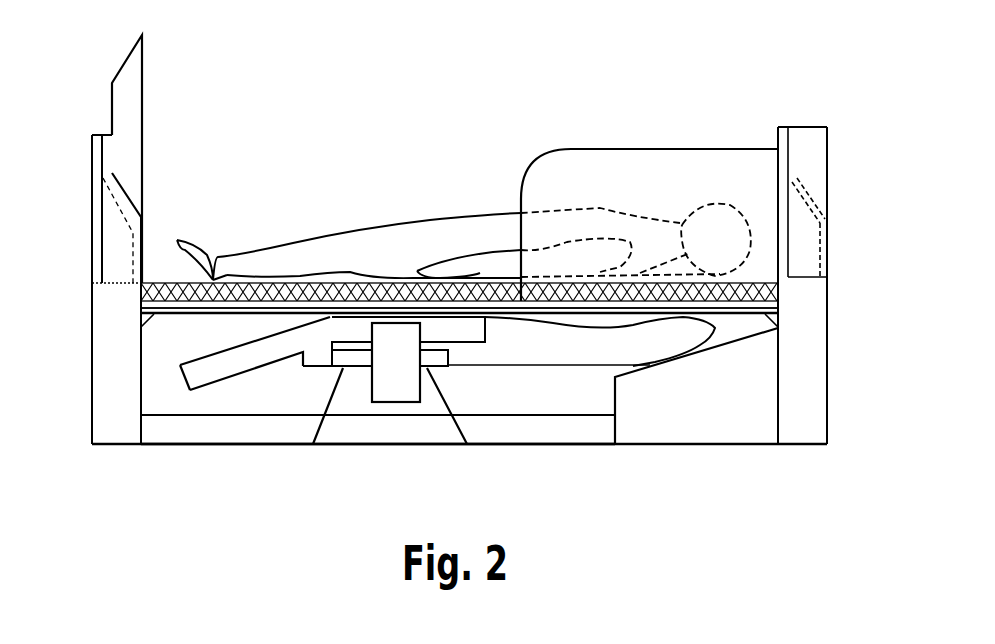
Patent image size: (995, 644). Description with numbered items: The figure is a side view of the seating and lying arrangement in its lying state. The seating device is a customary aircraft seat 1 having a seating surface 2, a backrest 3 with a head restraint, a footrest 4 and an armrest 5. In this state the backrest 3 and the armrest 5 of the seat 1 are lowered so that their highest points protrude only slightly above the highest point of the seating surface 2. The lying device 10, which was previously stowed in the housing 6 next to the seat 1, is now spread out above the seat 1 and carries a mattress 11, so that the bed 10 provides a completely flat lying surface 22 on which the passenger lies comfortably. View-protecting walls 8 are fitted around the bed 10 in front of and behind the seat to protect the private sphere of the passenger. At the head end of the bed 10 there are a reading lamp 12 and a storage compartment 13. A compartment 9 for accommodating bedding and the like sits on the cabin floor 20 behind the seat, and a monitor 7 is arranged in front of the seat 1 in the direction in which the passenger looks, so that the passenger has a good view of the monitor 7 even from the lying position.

The aircraft seat 1 is at (532, 375).
The seating surface 2 is at (313, 325).
The backrest 3 is at (583, 350).
The footrest 4 is at (207, 370).
The armrest 5 is at (470, 330).
The housing 6 is at (150, 355).
The monitor 7 is at (125, 108).
The view-protecting walls 8 is at (110, 243).
The compartment 9 is at (695, 428).
The lying device 10 is at (234, 300).
The mattress 11 is at (377, 278).
The reading lamp 12 is at (803, 187).
The storage compartment 13 is at (823, 253).
The cabin floor 20 is at (237, 446).
The lying surface 22 is at (490, 280).